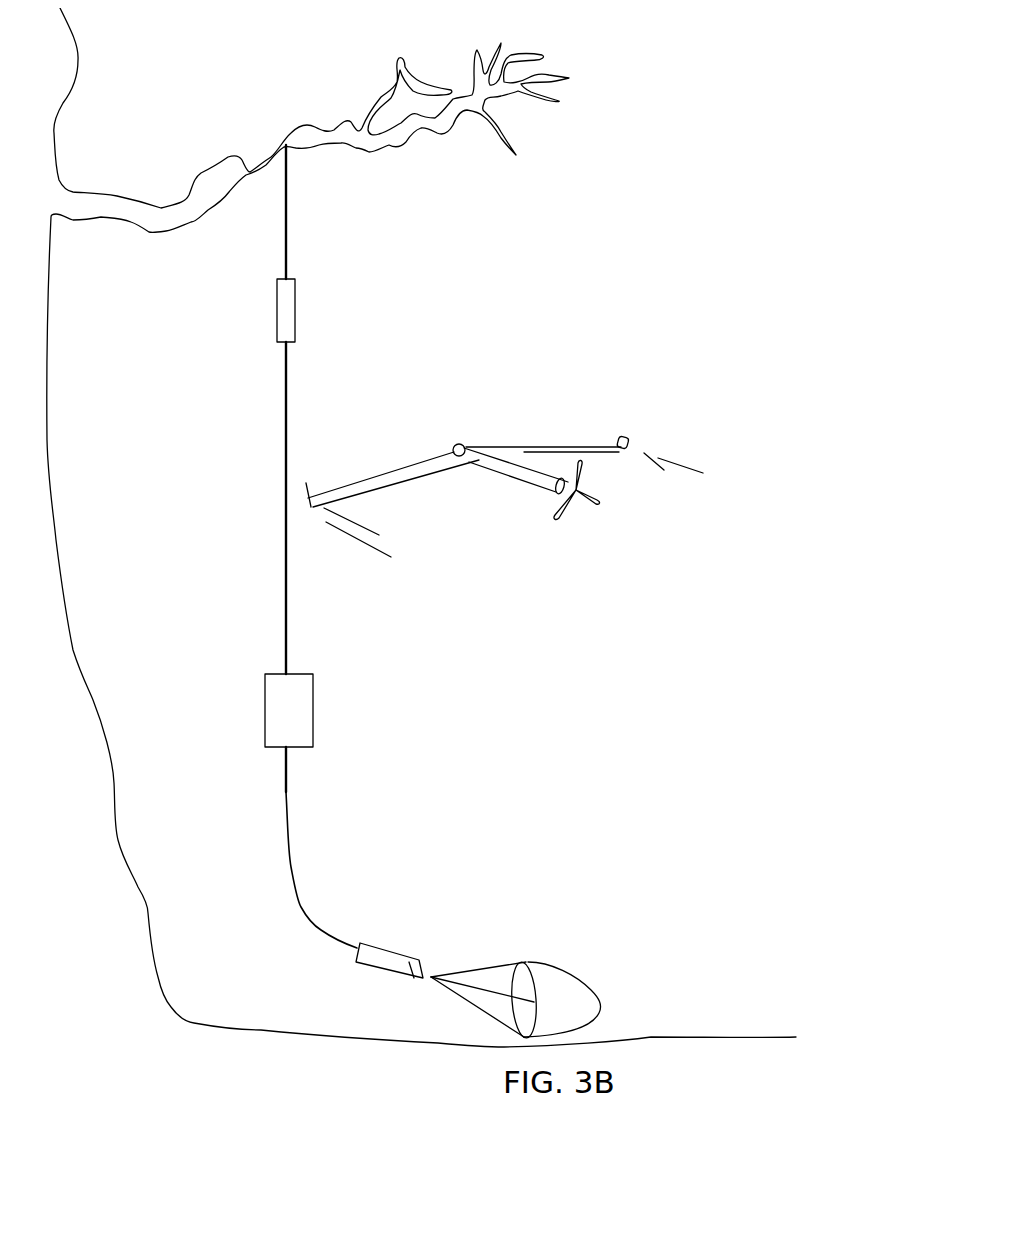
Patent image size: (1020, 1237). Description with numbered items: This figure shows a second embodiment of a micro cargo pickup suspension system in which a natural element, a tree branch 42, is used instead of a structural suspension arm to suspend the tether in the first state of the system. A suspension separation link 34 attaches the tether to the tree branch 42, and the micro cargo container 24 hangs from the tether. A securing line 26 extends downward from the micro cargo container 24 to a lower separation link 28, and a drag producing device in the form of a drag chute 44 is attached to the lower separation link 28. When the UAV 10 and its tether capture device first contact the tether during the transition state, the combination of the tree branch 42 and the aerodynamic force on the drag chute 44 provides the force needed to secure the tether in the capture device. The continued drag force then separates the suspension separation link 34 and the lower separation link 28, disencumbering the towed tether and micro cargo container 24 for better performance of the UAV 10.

The UAV 10 is at (528, 480).
The micro cargo container 24 is at (286, 612).
The securing line 26 is at (300, 726).
The lower separation link 28 is at (408, 967).
The suspension separation link 34 is at (283, 323).
The tree branch 42 is at (103, 200).
The drag chute 44 is at (557, 988).